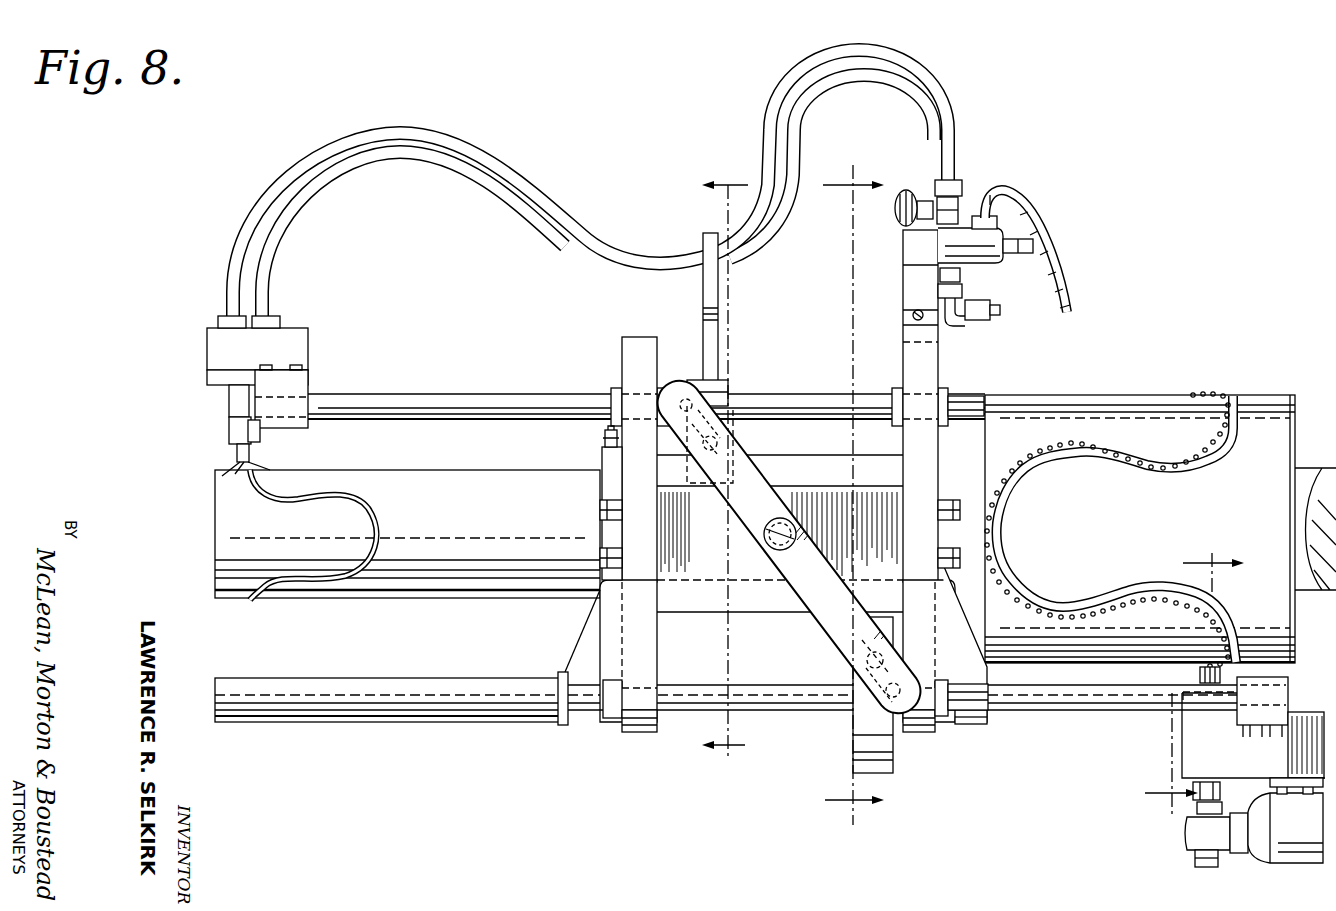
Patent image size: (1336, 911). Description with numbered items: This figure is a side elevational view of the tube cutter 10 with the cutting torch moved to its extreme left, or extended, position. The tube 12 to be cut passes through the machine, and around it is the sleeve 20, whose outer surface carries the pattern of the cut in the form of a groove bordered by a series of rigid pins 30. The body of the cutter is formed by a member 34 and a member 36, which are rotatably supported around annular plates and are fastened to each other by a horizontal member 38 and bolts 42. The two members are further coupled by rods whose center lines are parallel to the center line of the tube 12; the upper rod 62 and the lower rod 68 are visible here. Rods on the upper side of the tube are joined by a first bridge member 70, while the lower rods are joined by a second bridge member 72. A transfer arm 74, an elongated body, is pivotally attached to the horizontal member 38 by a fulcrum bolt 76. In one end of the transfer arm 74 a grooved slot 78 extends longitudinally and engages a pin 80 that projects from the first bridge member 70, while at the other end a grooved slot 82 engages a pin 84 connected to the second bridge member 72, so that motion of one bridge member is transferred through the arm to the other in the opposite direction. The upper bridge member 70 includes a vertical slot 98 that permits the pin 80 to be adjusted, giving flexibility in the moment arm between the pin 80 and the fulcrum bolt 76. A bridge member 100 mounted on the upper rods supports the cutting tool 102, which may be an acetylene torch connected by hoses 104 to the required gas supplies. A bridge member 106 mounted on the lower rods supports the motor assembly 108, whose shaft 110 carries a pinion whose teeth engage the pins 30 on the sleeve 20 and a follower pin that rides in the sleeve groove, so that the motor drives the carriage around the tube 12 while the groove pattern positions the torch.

The tube cutter 10 is at (1106, 276).
The tube 12 is at (447, 476).
The sleeve 20 is at (1160, 508).
The rigid pins 30 is at (1198, 464).
The member 34 is at (925, 455).
The member 36 is at (636, 342).
The horizontal member 38 is at (693, 570).
The bolts 42 is at (596, 560).
The rod 62 is at (468, 398).
The rod 68 is at (435, 722).
The first bridge member 70 is at (728, 382).
The second bridge member 72 is at (893, 740).
The transfer arm 74 is at (790, 598).
The fulcrum bolt 76 is at (794, 538).
The grooved slot 78 is at (740, 445).
The pin 80 is at (733, 434).
The grooved slot 82 is at (838, 630).
The pin 84 is at (850, 655).
The vertical slot 98 is at (690, 385).
The bridge member 100 is at (308, 392).
The cutting tool 102 is at (240, 452).
The hoses 104 is at (612, 253).
The bridge member 106 is at (1262, 702).
The motor assembly 108 is at (1252, 772).
The shaft 110 is at (1168, 686).